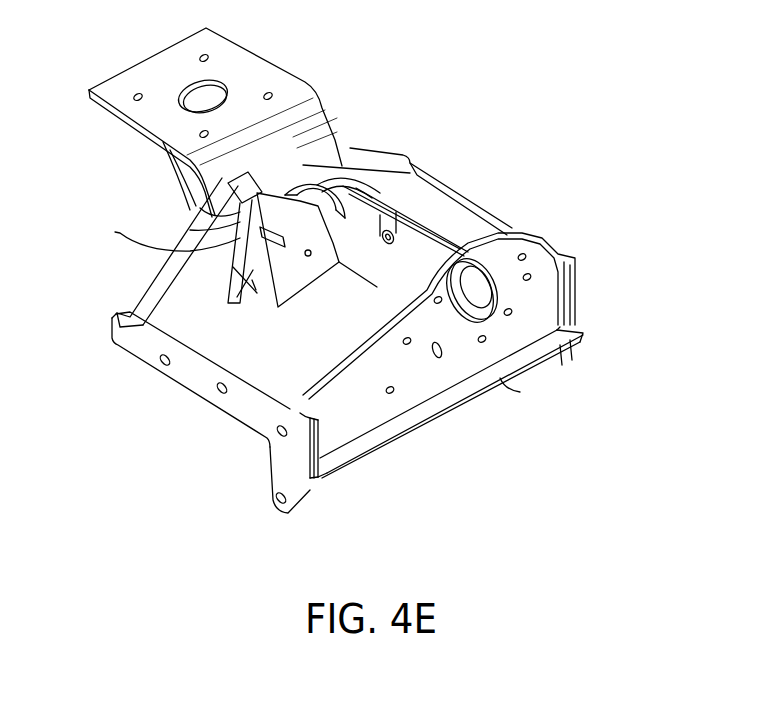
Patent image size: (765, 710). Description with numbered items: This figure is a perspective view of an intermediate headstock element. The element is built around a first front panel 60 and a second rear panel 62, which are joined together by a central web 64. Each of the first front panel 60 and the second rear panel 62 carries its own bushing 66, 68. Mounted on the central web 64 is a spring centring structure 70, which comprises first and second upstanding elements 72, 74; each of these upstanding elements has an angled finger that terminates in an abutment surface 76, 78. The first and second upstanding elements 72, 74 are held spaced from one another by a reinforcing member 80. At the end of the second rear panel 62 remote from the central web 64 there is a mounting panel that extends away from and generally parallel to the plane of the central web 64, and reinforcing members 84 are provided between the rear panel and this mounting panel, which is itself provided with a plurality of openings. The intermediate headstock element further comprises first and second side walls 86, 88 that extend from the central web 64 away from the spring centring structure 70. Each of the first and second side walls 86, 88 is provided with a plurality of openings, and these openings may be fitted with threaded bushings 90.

The first front panel 60 is at (522, 303).
The second rear panel 62 is at (343, 152).
The central web 64 is at (327, 349).
The bushing 66 is at (492, 275).
The bushing 68 is at (352, 152).
The spring centring structure 70 is at (256, 290).
The first upstanding element 72 is at (300, 277).
The second upstanding element 74 is at (188, 206).
The abutment surface 76 is at (190, 230).
The abutment surface 78 is at (257, 180).
The reinforcing member 80 is at (245, 272).
The reinforcing members 84 is at (152, 146).
The first side wall 86 is at (287, 457).
The second side wall 88 is at (556, 362).
The threaded bushings 90 is at (322, 490).